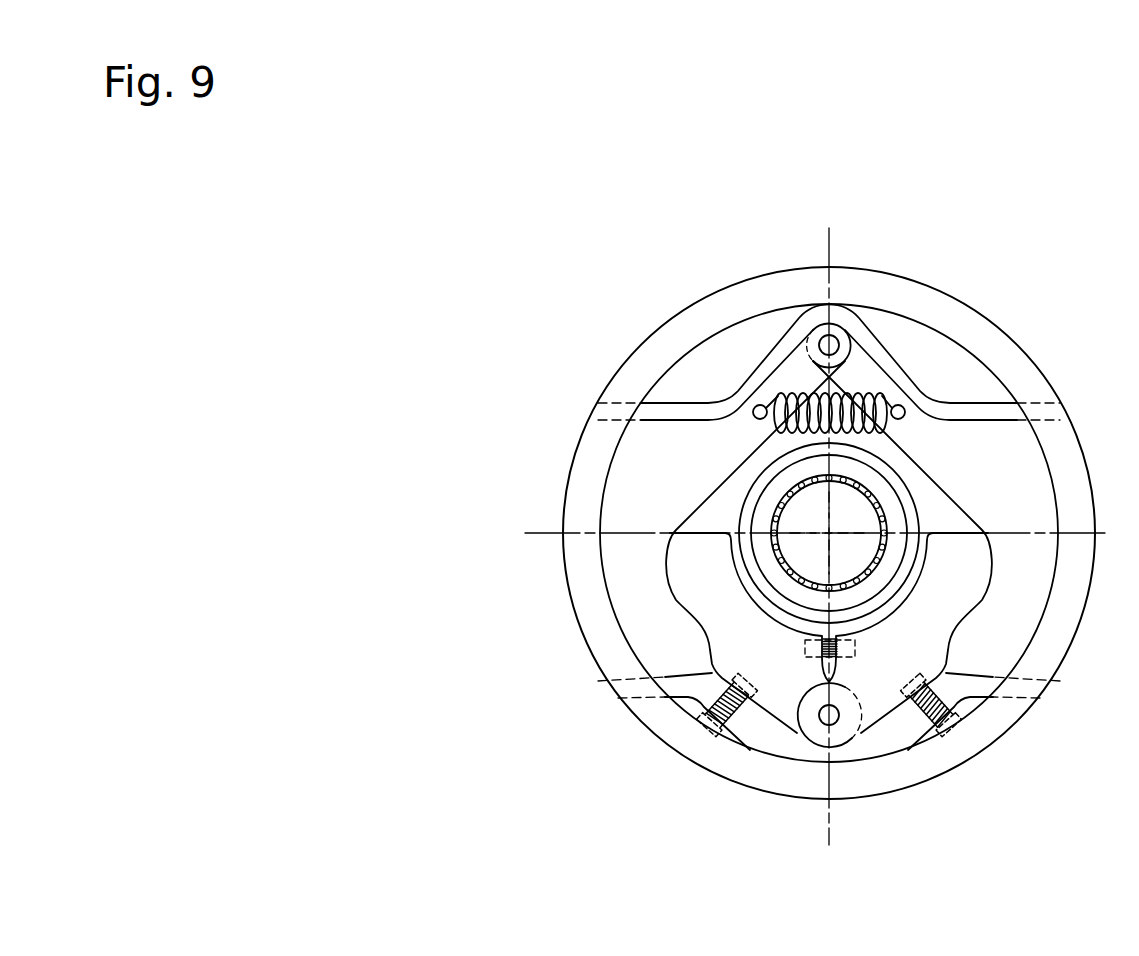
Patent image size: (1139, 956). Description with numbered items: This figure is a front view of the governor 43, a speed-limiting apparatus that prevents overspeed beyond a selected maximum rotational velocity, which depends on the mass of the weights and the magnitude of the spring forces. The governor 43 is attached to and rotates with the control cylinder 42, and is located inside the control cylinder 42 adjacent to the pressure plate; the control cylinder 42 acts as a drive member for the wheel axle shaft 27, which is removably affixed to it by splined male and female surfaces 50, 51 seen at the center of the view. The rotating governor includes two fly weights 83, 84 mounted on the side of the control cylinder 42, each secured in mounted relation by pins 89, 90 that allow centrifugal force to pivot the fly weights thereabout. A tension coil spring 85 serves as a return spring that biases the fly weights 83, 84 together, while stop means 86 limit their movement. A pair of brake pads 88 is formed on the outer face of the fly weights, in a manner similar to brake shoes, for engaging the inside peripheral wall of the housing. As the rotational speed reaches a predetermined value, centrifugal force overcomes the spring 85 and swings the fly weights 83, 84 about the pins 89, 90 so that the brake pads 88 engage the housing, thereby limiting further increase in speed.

The shaft 27 is at (808, 515).
The control cylinder 42 is at (947, 291).
The governor 43 is at (1012, 317).
The splined male surface 50 is at (876, 494).
The splined female surface 51 is at (893, 518).
The fly weight 83 is at (1025, 416).
The fly weight 84 is at (770, 715).
The tension coil spring 85 is at (780, 393).
The stop means 86 is at (856, 640).
The brake pads 88 is at (570, 640).
The pin 89 is at (812, 728).
The pin 90 is at (845, 331).